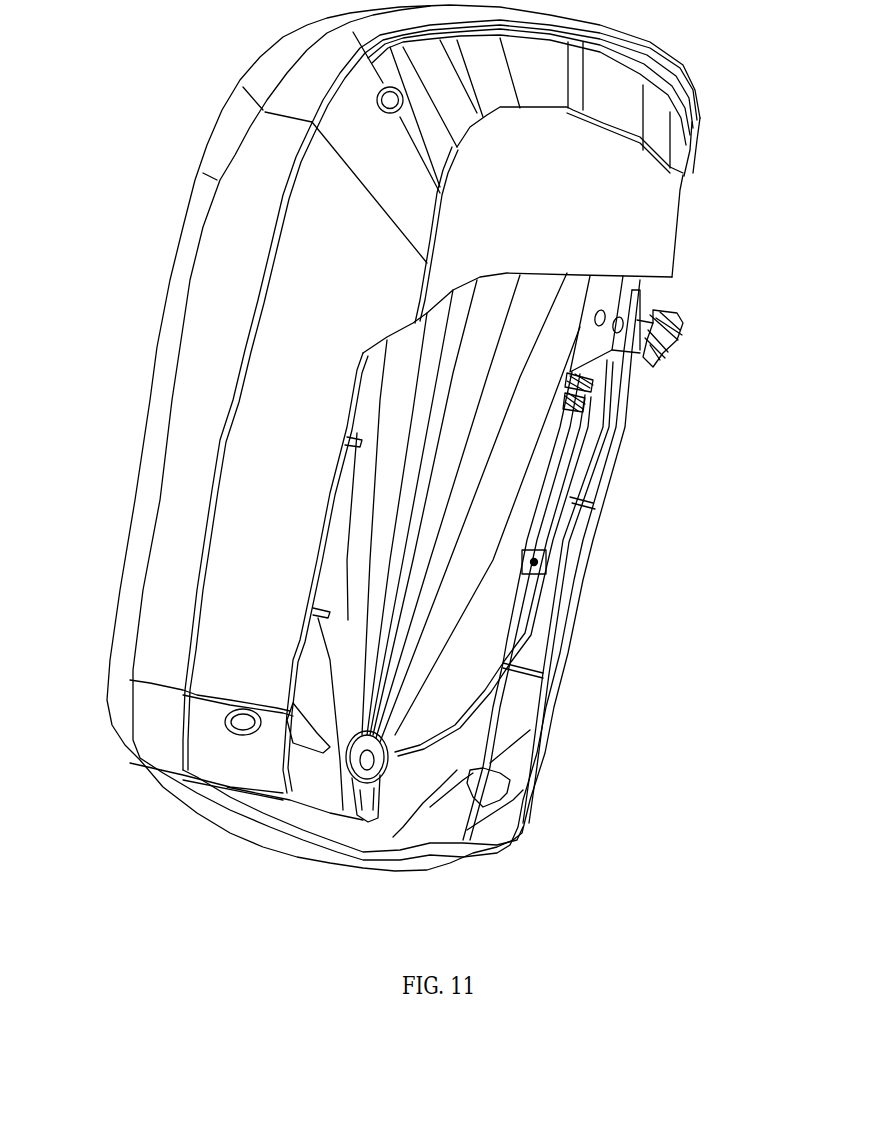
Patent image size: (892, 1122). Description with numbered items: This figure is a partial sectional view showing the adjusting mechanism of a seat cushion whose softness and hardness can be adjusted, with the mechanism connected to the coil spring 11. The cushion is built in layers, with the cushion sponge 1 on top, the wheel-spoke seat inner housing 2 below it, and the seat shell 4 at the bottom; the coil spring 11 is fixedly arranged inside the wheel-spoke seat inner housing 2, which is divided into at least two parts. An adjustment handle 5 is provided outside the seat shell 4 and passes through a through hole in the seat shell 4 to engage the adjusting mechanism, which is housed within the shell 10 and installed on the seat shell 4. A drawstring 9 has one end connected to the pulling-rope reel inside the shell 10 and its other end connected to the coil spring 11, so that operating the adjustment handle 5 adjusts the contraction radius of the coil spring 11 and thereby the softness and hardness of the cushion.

The cushion sponge 1 is at (243, 142).
The wheel-spoke seat inner housing 2 is at (425, 372).
The seat shell 4 is at (250, 478).
The adjustment handle 5 is at (687, 310).
The drawstring 9 is at (517, 643).
The shell 10 is at (580, 447).
The coil spring 11 is at (383, 757).